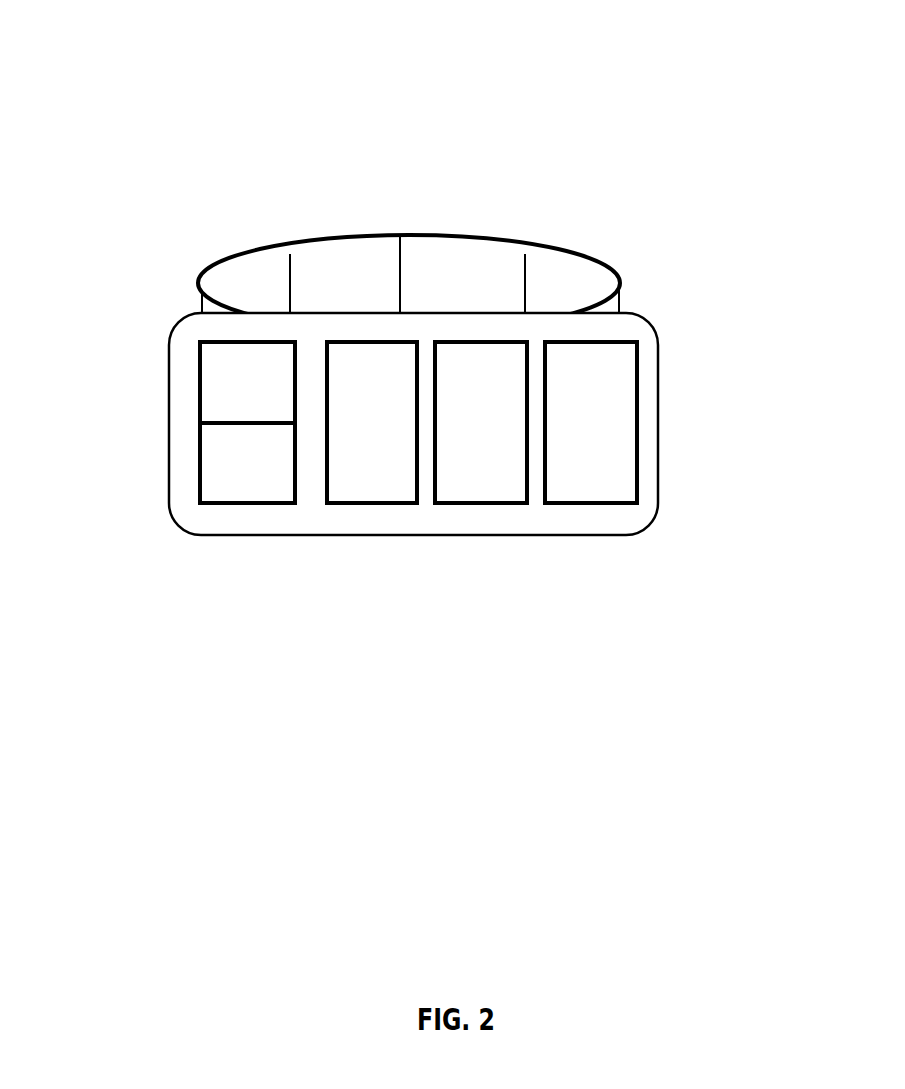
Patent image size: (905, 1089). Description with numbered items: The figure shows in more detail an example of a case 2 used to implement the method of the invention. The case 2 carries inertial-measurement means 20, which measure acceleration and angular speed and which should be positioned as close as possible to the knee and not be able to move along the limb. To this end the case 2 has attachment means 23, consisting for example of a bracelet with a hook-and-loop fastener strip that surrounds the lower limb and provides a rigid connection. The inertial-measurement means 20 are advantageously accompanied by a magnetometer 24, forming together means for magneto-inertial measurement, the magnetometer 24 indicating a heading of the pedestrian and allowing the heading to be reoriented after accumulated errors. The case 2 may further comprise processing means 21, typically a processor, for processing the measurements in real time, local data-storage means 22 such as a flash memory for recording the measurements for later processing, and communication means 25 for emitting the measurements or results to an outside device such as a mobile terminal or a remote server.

The case 2 is at (395, 326).
The inertial-measurement means 20 is at (187, 380).
The processing means 21 is at (405, 518).
The data-storage means 22 is at (492, 517).
The attachment means 23 is at (470, 223).
The magnetometer 24 is at (187, 483).
The communication means 25 is at (648, 432).